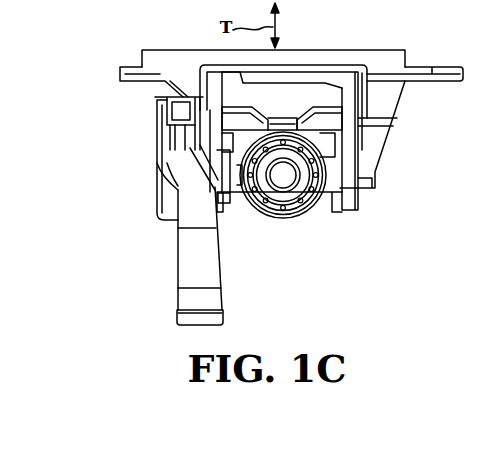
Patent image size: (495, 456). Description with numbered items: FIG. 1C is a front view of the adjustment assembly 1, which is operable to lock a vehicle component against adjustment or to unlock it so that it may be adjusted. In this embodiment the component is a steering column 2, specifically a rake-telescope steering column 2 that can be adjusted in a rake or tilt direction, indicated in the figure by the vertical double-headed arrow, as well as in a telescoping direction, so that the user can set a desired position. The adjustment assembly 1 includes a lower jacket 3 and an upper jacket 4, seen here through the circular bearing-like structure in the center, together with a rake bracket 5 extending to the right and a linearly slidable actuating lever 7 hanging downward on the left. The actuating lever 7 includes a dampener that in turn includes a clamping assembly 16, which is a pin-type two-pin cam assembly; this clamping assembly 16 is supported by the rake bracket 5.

The adjustment assembly 1 is at (140, 156).
The steering column 2 is at (293, 190).
The lower jacket 3 is at (283, 218).
The upper jacket 4 is at (313, 197).
The rake bracket 5 is at (390, 160).
The actuating lever 7 is at (160, 288).
The clamping assembly 16 is at (182, 112).